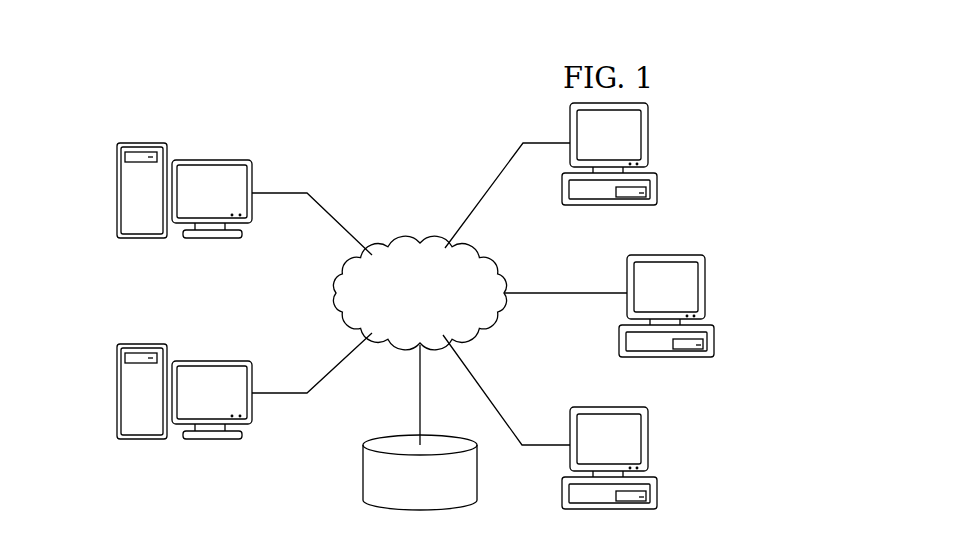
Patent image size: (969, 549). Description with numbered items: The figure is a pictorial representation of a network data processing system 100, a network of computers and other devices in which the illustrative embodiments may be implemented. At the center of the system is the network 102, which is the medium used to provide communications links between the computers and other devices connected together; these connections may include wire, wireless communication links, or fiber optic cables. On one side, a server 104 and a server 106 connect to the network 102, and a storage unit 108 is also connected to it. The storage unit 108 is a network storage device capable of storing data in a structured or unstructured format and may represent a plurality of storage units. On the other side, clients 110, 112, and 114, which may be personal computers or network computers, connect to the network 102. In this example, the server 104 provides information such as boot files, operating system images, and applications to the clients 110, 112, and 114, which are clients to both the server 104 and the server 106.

The network data processing system 100 is at (310, 113).
The network 102 is at (415, 241).
The server 104 is at (115, 190).
The server 106 is at (115, 390).
The storage unit 108 is at (362, 473).
The client 110 is at (658, 188).
The client 112 is at (716, 340).
The client 114 is at (658, 490).